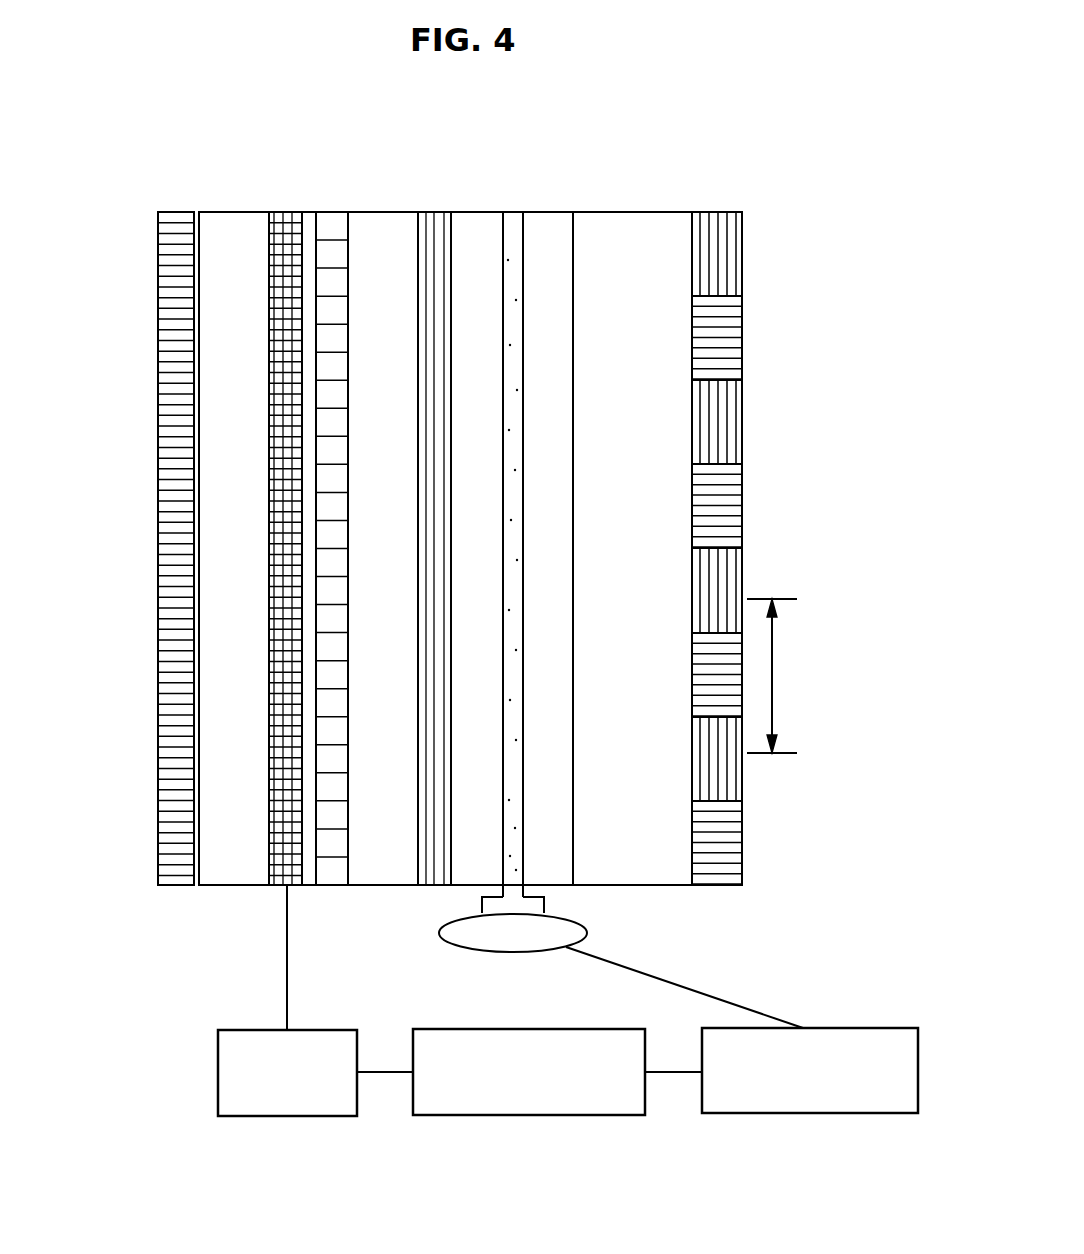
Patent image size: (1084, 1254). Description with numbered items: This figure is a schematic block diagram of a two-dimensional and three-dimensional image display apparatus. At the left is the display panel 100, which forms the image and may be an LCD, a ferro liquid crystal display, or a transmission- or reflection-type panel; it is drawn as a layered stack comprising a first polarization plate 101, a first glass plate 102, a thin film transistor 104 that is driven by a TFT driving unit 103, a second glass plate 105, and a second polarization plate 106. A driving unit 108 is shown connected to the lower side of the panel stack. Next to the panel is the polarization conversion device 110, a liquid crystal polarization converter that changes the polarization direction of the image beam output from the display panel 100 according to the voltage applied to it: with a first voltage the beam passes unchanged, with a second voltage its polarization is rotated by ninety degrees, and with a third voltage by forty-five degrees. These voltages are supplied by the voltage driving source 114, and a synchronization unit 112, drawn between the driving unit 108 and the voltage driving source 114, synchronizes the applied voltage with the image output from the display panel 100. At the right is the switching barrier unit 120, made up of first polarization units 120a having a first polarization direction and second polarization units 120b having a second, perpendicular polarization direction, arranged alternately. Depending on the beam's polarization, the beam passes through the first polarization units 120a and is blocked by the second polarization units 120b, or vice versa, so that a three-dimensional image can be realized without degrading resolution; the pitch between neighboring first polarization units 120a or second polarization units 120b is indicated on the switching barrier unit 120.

The display panel 100 is at (450, 200).
The first polarization plate 101 is at (178, 713).
The first glass plate 102 is at (217, 627).
The TFT driving unit 103 is at (283, 561).
The thin film transistor (TFT) 104 is at (325, 484).
The second glass plate 105 is at (370, 389).
The second polarization plate 106 is at (428, 318).
The driving unit 108 is at (288, 1116).
The polarization conversion device 110 is at (572, 200).
The synchronization unit 112 is at (527, 1115).
The voltage driving source 114 is at (810, 1113).
The switching barrier unit 120 is at (718, 212).
The first polarization unit 120a is at (728, 264).
The second polarization unit 120b is at (730, 332).